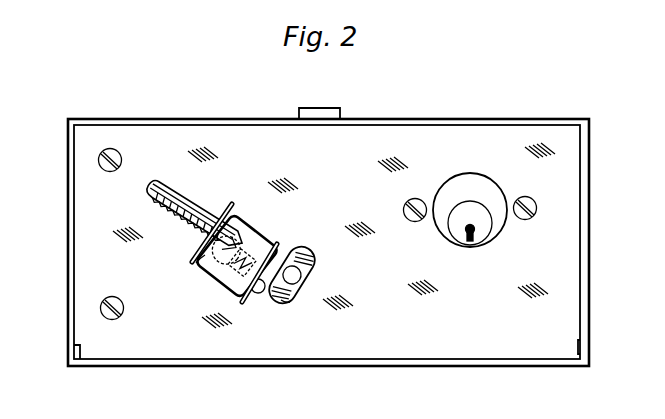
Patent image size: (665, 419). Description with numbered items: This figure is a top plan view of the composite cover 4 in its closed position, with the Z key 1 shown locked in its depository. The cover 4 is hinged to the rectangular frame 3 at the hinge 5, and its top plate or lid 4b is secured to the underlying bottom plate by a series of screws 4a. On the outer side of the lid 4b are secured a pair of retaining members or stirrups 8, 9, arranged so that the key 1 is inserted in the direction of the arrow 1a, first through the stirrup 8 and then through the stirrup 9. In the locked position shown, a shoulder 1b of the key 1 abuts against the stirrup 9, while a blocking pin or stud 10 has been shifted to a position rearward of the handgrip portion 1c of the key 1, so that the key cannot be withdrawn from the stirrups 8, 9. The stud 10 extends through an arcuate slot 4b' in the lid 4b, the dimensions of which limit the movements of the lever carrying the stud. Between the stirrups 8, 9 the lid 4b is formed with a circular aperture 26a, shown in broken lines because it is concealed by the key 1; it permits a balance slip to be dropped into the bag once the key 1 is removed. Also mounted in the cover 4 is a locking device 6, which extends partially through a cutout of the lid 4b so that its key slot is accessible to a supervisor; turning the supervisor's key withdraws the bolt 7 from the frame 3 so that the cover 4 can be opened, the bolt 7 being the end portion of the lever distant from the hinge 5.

The Z key 1 is at (210, 275).
The arrow 1a is at (312, 287).
The shoulder 1b is at (198, 268).
The handgrip portion 1c is at (269, 292).
The frame 3 is at (591, 167).
The composite cover 4 is at (373, 118).
The screws 4a is at (114, 149).
The top plate or lid 4b is at (482, 313).
The arcuate slot 4b' is at (308, 264).
The hinge 5 is at (74, 350).
The locking device 6 is at (475, 175).
The bolt 7 is at (311, 107).
The stirrup 8 is at (284, 243).
The stirrup 9 is at (233, 203).
The blocking pin or stud 10 is at (304, 278).
The aperture 26a is at (250, 240).